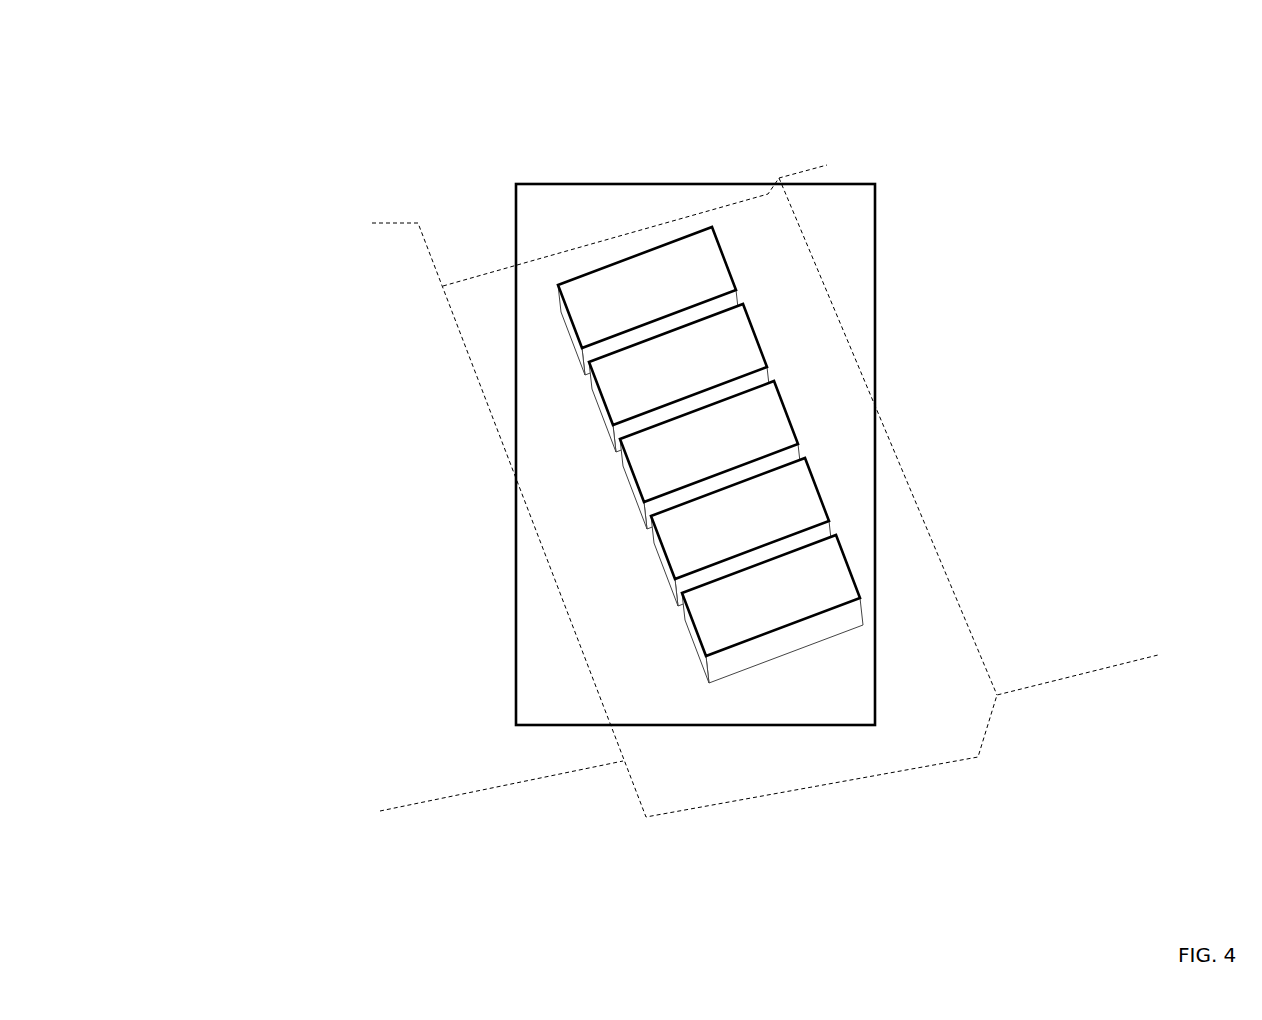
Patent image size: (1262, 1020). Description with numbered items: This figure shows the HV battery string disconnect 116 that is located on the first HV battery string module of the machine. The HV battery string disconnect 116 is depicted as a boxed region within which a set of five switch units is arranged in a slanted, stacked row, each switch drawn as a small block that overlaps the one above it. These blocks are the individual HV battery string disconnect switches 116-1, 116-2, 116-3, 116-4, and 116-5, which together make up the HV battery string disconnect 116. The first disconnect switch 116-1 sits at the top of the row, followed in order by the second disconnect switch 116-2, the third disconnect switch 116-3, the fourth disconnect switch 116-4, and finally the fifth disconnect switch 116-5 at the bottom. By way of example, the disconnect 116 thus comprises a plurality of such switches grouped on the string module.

The HV battery string disconnect 116 is at (695, 382).
The HV battery string disconnect switch 116-1 is at (628, 297).
The HV battery string disconnect switch 116-2 is at (643, 376).
The HV battery string disconnect switch 116-3 is at (675, 452).
The HV battery string disconnect switch 116-4 is at (720, 535).
The HV battery string disconnect switch 116-5 is at (751, 612).